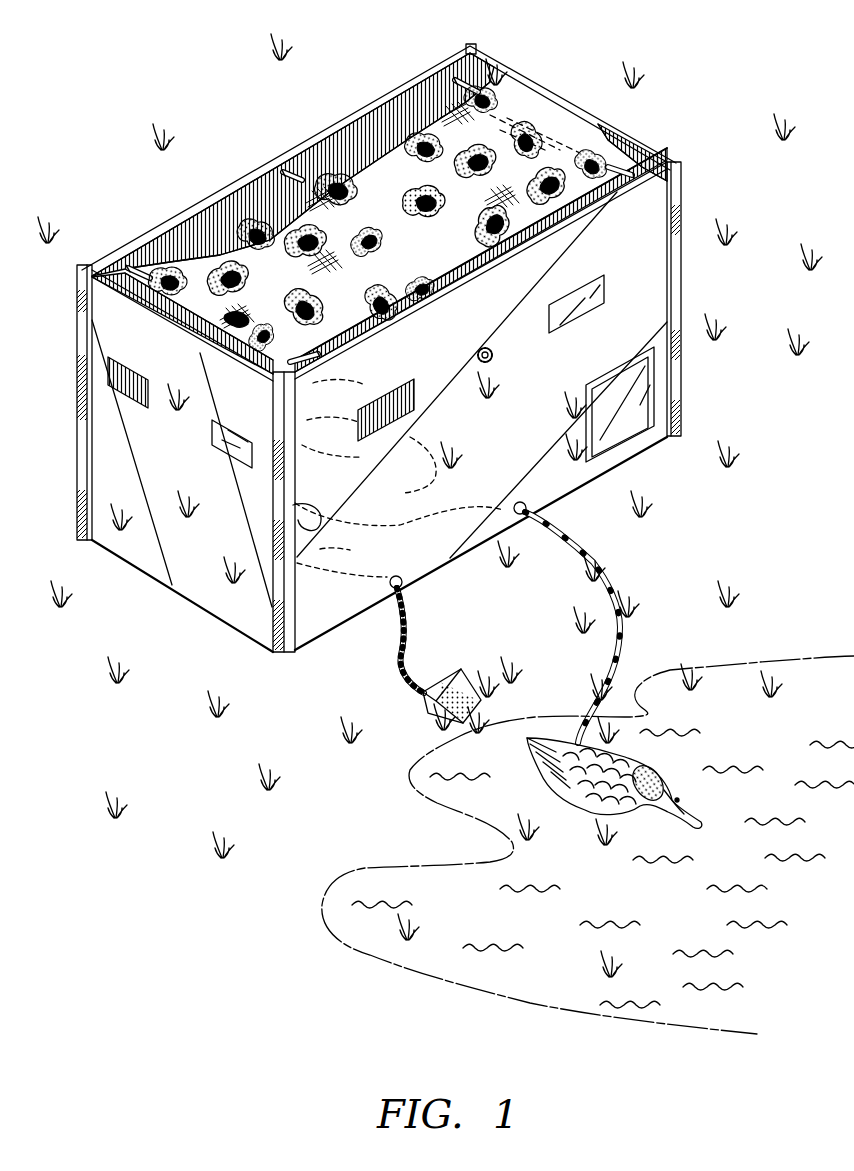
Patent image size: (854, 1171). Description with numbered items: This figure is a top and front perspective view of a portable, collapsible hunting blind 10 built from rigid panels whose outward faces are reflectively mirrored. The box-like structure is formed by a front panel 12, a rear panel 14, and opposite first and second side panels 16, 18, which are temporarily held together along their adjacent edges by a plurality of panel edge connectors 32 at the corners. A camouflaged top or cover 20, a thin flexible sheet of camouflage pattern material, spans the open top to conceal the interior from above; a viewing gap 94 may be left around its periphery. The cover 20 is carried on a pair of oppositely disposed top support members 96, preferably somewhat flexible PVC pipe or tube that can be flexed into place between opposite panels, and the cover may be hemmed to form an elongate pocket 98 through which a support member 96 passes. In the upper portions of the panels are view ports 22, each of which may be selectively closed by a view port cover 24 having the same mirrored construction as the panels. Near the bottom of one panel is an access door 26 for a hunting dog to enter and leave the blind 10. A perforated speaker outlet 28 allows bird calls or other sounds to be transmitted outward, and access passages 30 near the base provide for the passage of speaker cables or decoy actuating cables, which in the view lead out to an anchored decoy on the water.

The hunting blind 10 is at (180, 655).
The front panel 12 is at (472, 440).
The rear panel 14 is at (194, 203).
The first side panel 16 is at (165, 489).
The second side panel 18 is at (520, 74).
The camouflaged top or cover 20 is at (374, 192).
The view port 22 is at (128, 358).
The view port cover 24 is at (245, 437).
The access door 26 is at (640, 444).
The perforated speaker outlet 28 is at (490, 348).
The access passage 30 is at (527, 506).
The panel edge connector 32 is at (470, 45).
The viewing gap 94 is at (350, 140).
The top support member 96 is at (288, 172).
The elongate pocket 98 is at (300, 362).